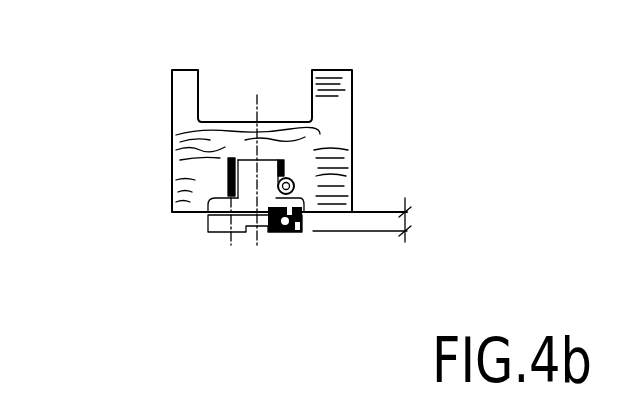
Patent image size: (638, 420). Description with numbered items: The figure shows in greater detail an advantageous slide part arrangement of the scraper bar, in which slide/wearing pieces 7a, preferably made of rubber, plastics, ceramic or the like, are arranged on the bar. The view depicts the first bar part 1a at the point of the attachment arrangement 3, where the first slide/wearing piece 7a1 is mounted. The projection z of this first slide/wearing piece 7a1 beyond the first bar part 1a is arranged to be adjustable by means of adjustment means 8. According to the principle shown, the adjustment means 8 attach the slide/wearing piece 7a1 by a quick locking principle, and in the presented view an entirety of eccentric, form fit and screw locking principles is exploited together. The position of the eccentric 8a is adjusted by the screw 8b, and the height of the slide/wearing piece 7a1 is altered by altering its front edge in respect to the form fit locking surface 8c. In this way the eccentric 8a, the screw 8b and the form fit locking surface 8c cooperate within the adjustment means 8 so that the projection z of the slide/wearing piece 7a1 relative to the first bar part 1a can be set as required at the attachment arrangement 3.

The first bar part 1a is at (333, 130).
The attachment arrangement 3 is at (354, 56).
The adjustment means 8 is at (306, 172).
The eccentric 8a is at (278, 186).
The form fit locking surface 8c is at (204, 175).
The screw 8b is at (285, 232).
The slide/wearing piece 7a is at (198, 260).
The first slide/wearing piece 7a1 is at (212, 243).
The projection z is at (407, 213).